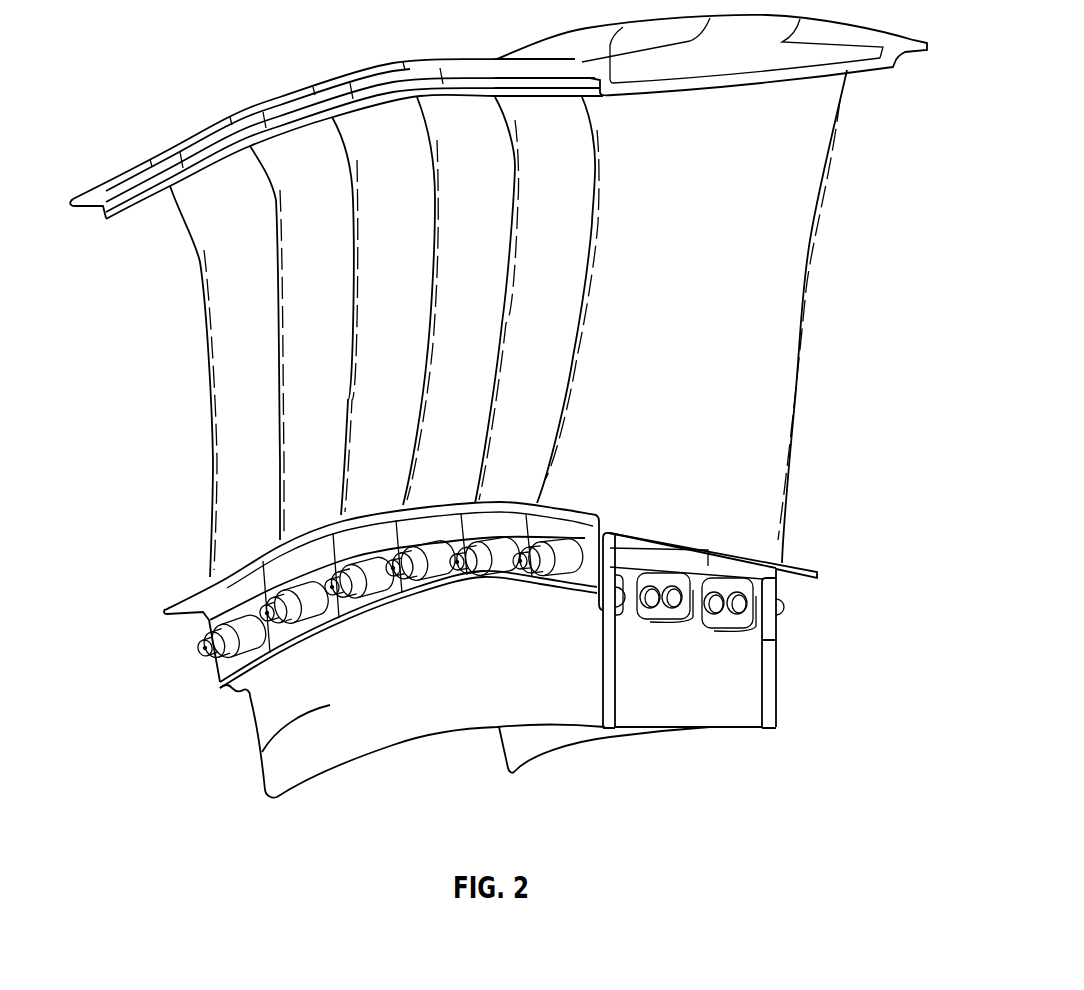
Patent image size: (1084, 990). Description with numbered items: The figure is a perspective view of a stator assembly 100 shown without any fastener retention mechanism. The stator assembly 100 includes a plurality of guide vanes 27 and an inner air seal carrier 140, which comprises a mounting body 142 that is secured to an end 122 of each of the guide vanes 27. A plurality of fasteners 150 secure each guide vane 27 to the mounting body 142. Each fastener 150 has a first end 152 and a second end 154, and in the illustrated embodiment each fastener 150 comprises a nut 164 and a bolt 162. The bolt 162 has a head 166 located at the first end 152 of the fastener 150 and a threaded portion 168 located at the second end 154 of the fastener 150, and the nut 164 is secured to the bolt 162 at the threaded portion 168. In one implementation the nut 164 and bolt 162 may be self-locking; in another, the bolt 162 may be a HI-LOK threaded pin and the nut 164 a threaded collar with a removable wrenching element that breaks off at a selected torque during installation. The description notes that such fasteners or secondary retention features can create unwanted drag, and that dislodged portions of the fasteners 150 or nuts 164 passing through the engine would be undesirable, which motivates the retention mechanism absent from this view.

The stator assembly 100 is at (208, 48).
The guide vane 27 is at (787, 340).
The end of guide vane 122 is at (504, 522).
The nut 164 is at (592, 512).
The fastener 150 is at (512, 598).
The bolt 162 is at (547, 566).
The threaded portion 168 is at (544, 578).
The first end of fastener 152 is at (752, 580).
The second end of fastener 154 is at (792, 593).
The head 166 is at (731, 610).
The mounting body 142 is at (233, 690).
The inner air seal carrier 140 is at (268, 750).